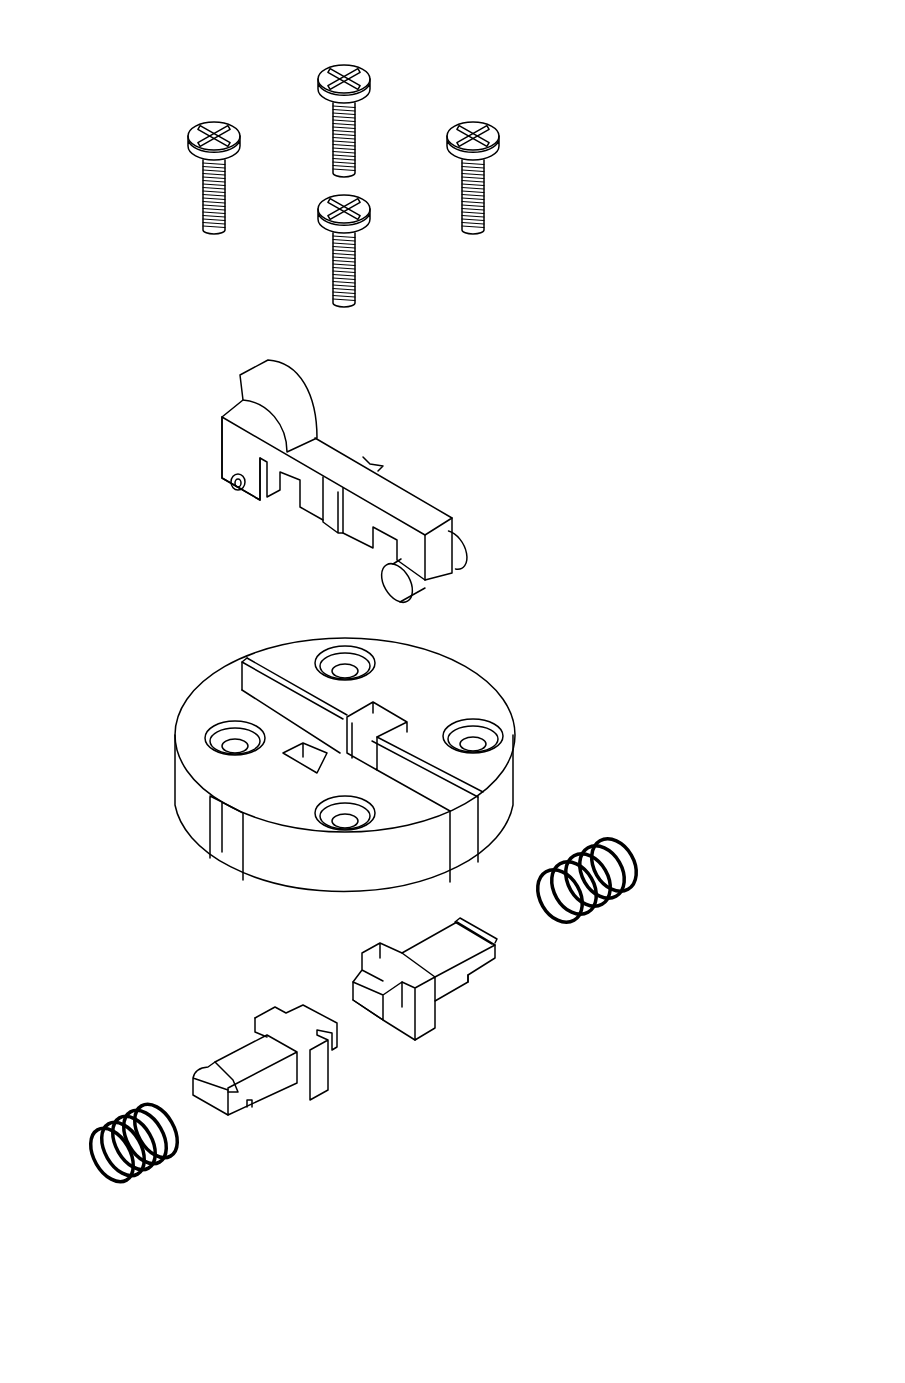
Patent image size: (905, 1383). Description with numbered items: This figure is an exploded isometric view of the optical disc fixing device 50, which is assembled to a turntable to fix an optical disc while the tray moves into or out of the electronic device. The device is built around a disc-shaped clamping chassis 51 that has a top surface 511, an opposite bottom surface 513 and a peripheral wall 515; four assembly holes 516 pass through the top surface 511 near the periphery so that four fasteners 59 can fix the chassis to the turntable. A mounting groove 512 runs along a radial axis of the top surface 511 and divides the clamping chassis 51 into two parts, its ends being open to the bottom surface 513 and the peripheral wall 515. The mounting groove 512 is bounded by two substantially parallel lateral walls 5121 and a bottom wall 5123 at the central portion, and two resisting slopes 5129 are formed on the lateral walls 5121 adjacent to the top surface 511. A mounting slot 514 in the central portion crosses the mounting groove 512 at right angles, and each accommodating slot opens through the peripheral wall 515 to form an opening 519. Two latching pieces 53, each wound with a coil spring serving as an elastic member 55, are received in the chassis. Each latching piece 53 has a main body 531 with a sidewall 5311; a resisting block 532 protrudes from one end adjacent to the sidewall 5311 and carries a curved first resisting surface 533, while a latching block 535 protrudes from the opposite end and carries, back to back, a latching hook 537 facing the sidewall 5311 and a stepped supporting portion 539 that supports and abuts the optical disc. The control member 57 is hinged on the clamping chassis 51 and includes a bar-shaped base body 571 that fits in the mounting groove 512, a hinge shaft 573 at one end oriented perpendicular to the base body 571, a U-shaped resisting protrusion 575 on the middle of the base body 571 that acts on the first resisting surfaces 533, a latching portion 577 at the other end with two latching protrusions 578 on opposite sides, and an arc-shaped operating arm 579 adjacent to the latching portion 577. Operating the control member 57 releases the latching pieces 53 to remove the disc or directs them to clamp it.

The optical disc fixing device 50 is at (207, 60).
The fasteners 59 is at (483, 190).
The control member 57 is at (232, 340).
The base body 571 is at (410, 506).
The hinge shaft 573 is at (458, 550).
The resisting protrusion 575 is at (370, 464).
The latching portion 577 is at (235, 440).
The latching protrusions 578 is at (231, 482).
The operating arm 579 is at (290, 405).
The clamping chassis 51 is at (158, 686).
The top surface 511 is at (452, 693).
The mounting groove 512 is at (328, 673).
The lateral walls 5121 is at (390, 762).
The bottom wall 5123 is at (315, 758).
The resisting slopes 5129 is at (263, 688).
The bottom surface 513 is at (172, 829).
The mounting slot 514 is at (300, 756).
The peripheral wall 515 is at (493, 798).
The assembly holes 516 is at (475, 742).
The opening 519 is at (228, 858).
The elastic members 55 is at (605, 905).
The latching pieces 53 is at (430, 1052).
The main body 531 is at (415, 1004).
The sidewall 5311 is at (380, 958).
The resisting block 532 is at (390, 1004).
The first resisting surface 533 is at (365, 980).
The latching block 535 is at (450, 984).
The latching hook 537 is at (497, 938).
The supporting portion 539 is at (470, 979).